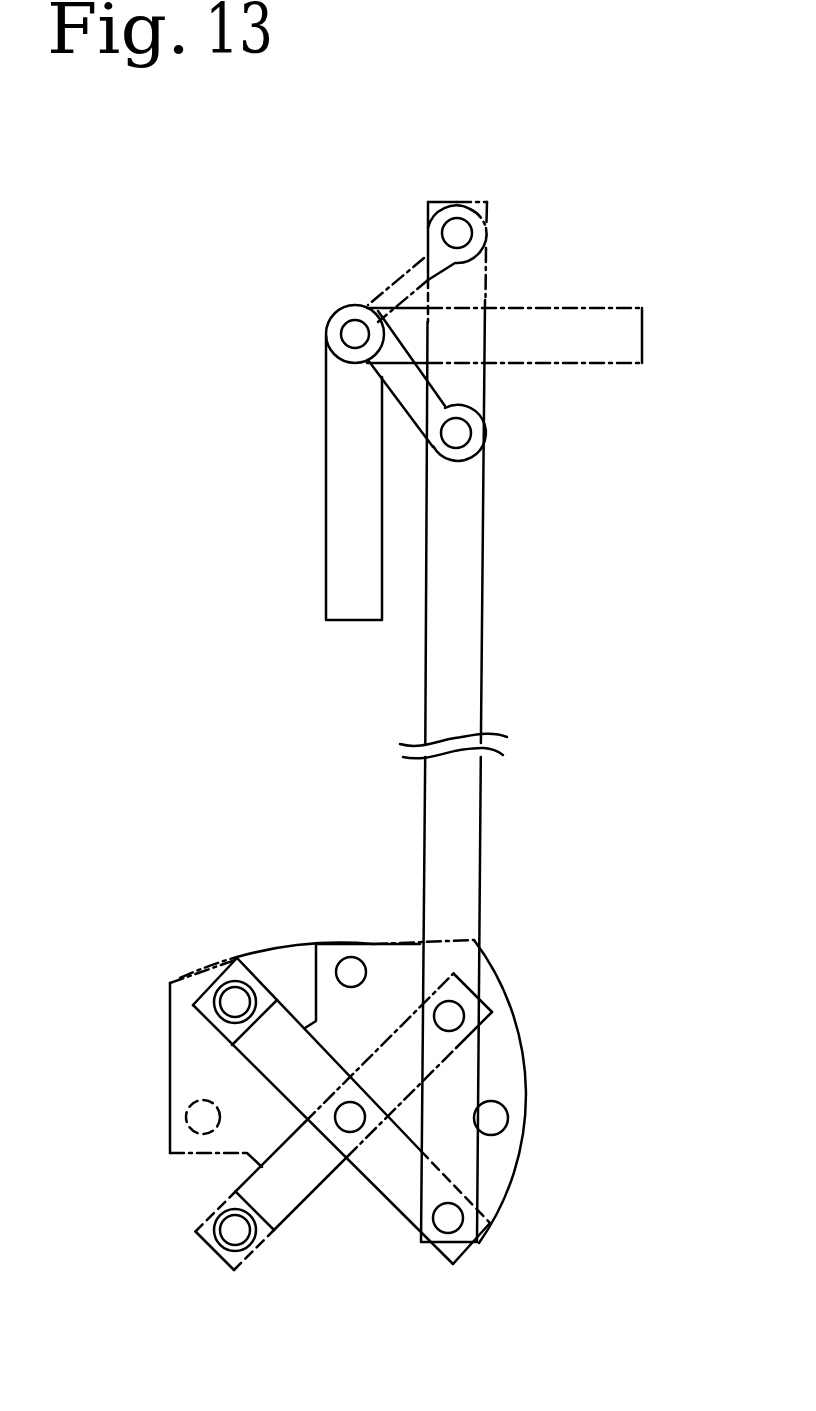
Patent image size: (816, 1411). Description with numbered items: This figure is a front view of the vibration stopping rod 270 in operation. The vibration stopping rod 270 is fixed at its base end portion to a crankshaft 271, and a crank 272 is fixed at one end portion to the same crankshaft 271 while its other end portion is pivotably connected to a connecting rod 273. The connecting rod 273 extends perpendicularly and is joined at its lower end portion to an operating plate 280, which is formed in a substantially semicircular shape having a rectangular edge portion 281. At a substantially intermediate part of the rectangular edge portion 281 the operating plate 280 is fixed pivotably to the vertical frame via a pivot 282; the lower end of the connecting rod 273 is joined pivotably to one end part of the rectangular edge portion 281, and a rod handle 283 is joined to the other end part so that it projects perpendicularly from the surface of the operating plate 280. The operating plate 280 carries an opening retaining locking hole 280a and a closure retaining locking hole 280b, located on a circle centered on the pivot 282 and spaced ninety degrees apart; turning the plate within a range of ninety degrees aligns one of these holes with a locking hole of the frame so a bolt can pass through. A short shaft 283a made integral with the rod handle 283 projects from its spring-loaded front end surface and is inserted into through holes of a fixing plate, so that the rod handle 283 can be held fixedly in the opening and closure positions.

The vibration stopping rod 270 is at (333, 500).
The crankshaft 271 is at (344, 330).
The crank 272 is at (395, 398).
The connecting rod 273 is at (460, 667).
The operating plate 280 is at (525, 1068).
The opening retaining locking hole 280a is at (348, 972).
The closure retaining locking hole 280b is at (495, 1122).
The rectangular edge portion 281 is at (270, 1060).
The pivot 282 is at (357, 1120).
The rod handle 283 is at (242, 970).
The short shaft 283a is at (237, 1027).